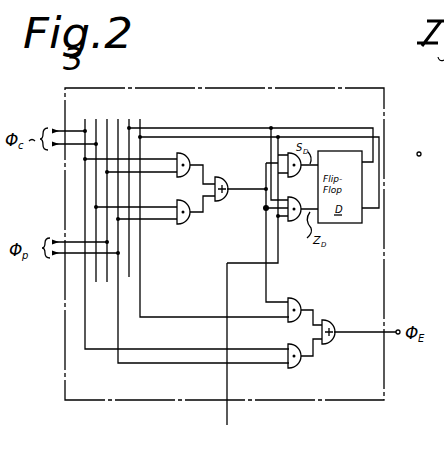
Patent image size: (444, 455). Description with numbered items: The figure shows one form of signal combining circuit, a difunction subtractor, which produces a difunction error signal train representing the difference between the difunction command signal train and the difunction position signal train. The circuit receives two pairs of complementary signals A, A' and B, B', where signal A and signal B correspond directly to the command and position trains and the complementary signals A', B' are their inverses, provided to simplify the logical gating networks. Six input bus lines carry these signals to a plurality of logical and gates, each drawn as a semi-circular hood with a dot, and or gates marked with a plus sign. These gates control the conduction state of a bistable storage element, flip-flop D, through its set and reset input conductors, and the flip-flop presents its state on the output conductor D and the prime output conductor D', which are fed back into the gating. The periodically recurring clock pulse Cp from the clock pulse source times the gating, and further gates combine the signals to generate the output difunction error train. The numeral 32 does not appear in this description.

The terminal (adjacent figure) 32 is at (437, 141).
The signal A is at (183, 224).
The signal A' is at (94, 190).
The signal B is at (104, 190).
The signal B' is at (200, 231).
The flip-flop D is at (127, 188).
The prime output conductor of flip-flop D D' is at (211, 208).
The clock pulse Cp is at (231, 356).